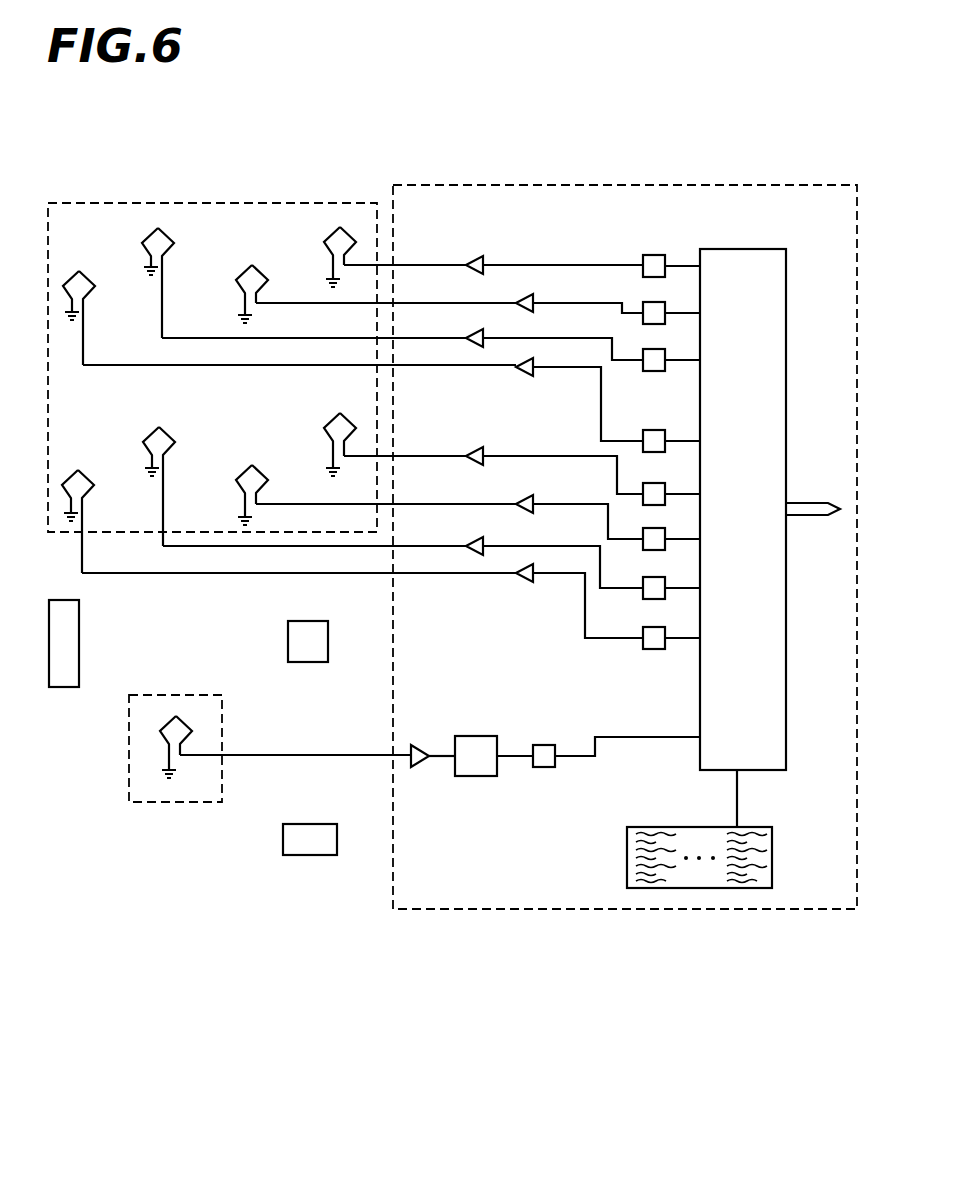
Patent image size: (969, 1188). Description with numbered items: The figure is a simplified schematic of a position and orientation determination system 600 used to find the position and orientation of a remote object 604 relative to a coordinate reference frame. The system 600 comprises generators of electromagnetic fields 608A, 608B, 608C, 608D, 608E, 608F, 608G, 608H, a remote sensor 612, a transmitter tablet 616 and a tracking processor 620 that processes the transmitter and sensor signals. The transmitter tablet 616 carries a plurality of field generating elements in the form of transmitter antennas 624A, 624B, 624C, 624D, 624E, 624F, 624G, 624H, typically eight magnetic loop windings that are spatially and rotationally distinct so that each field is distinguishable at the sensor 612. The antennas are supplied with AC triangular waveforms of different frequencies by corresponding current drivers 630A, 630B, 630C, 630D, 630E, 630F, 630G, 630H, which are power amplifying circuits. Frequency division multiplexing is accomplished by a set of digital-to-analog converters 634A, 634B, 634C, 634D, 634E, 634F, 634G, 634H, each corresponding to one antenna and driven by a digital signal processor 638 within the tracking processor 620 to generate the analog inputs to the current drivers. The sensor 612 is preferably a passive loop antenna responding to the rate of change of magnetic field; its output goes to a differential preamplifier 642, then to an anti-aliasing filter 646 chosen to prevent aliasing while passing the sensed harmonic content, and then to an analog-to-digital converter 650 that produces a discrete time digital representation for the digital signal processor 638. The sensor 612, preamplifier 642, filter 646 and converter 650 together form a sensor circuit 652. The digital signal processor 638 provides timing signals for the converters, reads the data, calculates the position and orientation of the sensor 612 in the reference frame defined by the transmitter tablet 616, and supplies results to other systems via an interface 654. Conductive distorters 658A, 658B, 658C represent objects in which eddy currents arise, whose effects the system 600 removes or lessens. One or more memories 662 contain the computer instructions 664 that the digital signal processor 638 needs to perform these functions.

The system 600 is at (376, 950).
The remote object 604 is at (128, 733).
The remote sensor 612 is at (187, 718).
The transmitter tablet 616 is at (247, 203).
The tracking processor 620 is at (643, 168).
The transmitter antenna 624A is at (334, 232).
The transmitter antenna 624B is at (241, 268).
The transmitter antenna 624C is at (152, 230).
The transmitter antenna 624D is at (90, 271).
The transmitter antenna 624E is at (333, 420).
The transmitter antenna 624F is at (242, 471).
The transmitter antenna 624G is at (150, 440).
The transmitter antenna 624H is at (89, 482).
The generator of electromagnetic fields 608A is at (412, 262).
The generator of electromagnetic fields 608B is at (350, 299).
The generator of electromagnetic fields 608C is at (288, 342).
The generator of electromagnetic fields 608D is at (226, 370).
The generator of electromagnetic fields 608E is at (557, 450).
The generator of electromagnetic fields 608F is at (305, 494).
The generator of electromagnetic fields 608G is at (267, 548).
The generator of electromagnetic fields 608H is at (208, 578).
The current driver 630A is at (469, 257).
The current driver 630B is at (534, 296).
The current driver 630C is at (483, 333).
The current driver 630D is at (532, 376).
The current driver 630E is at (483, 448).
The current driver 630F is at (533, 497).
The current driver 630G is at (483, 540).
The current driver 630H is at (533, 580).
The digital-to-analog converter 634A is at (650, 255).
The digital-to-analog converter 634B is at (665, 304).
The digital-to-analog converter 634C is at (665, 352).
The digital-to-analog converter 634D is at (665, 431).
The digital-to-analog converter 634E is at (665, 486).
The digital-to-analog converter 634F is at (665, 530).
The digital-to-analog converter 634G is at (665, 580).
The digital-to-analog converter 634H is at (665, 630).
The digital signal processor 638 is at (753, 249).
The differential preamplifier 642 is at (416, 745).
The anti-aliasing filter 646 is at (472, 777).
The analog-to-digital converter 650 is at (545, 745).
The sensor circuit 652 is at (314, 742).
The interface 654 is at (812, 503).
The conductive distorter 658A is at (79, 645).
The conductive distorter 658B is at (302, 621).
The conductive distorter 658C is at (300, 856).
The memory 662 is at (627, 867).
The computer instructions 664 is at (653, 822).